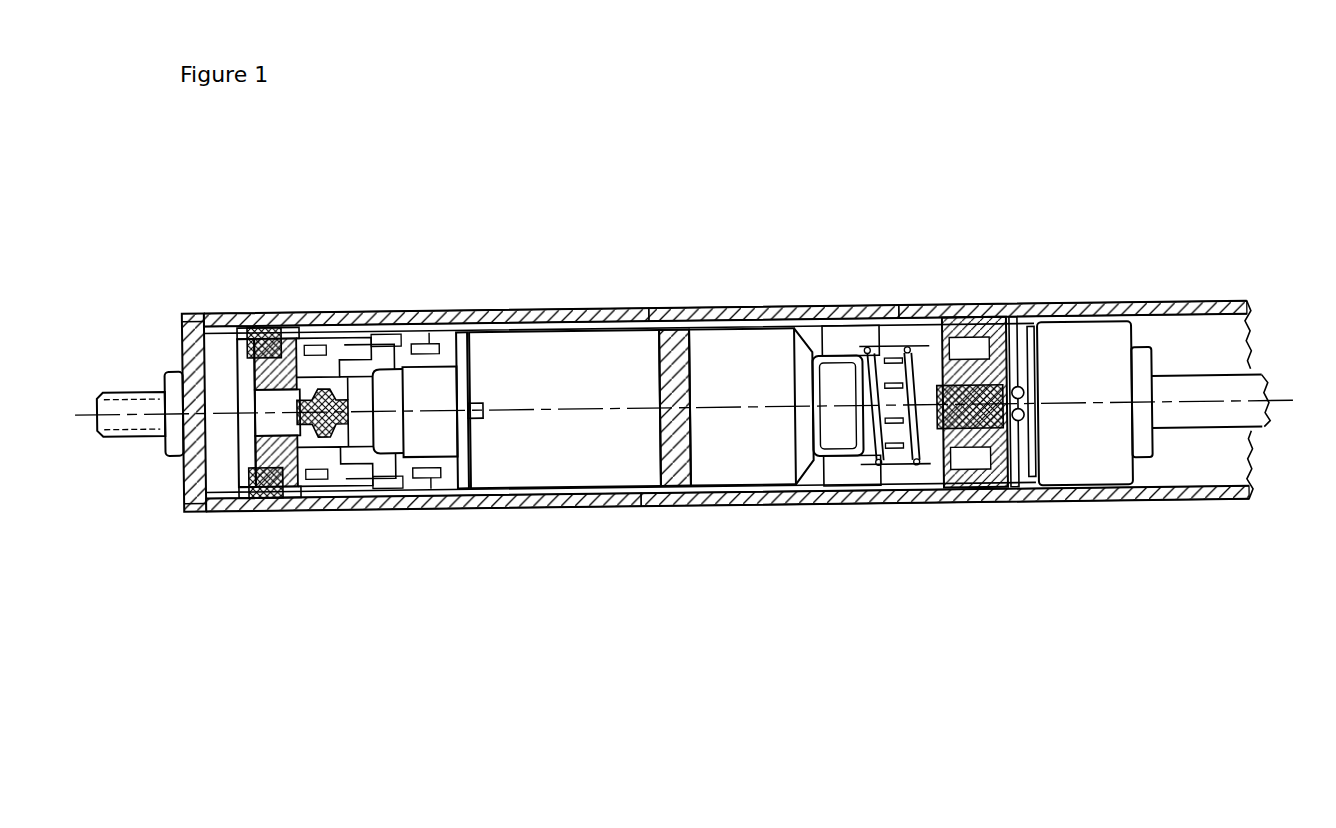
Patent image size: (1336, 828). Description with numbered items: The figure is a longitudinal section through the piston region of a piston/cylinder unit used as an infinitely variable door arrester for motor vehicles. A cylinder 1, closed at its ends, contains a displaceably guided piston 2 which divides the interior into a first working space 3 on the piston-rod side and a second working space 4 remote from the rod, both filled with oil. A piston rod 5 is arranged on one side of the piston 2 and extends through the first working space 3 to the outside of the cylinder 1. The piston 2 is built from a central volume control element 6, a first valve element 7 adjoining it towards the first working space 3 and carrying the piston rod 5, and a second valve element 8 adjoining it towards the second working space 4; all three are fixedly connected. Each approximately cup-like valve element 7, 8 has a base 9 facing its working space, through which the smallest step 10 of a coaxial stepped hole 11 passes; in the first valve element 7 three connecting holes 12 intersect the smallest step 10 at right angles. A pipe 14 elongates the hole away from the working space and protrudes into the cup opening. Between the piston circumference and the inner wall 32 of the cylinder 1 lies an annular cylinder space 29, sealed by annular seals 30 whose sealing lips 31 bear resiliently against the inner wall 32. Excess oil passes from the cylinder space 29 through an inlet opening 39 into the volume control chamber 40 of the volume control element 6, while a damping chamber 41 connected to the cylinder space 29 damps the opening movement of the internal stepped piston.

The cylinder 1 is at (717, 310).
The piston 2 is at (593, 307).
The first working space 3 is at (1200, 338).
The second working space 4 is at (222, 352).
The piston rod 5 is at (1250, 383).
The central volume control element 6 is at (622, 360).
The first valve element 7 is at (935, 307).
The second valve element 8 is at (330, 345).
The base 9 is at (262, 457).
The smallest step 10 is at (247, 408).
The stepped hole 11 is at (313, 480).
The connecting holes 12 is at (1022, 350).
The pipe 14 is at (302, 375).
The annular cylinder space 29 is at (550, 507).
The annular seals 30 is at (260, 517).
The sealing lip 31 is at (257, 503).
The inner wall 32 is at (203, 512).
The inlet opening 39 is at (712, 495).
The volume control chamber 40 is at (750, 458).
The damping chamber 41 is at (392, 363).